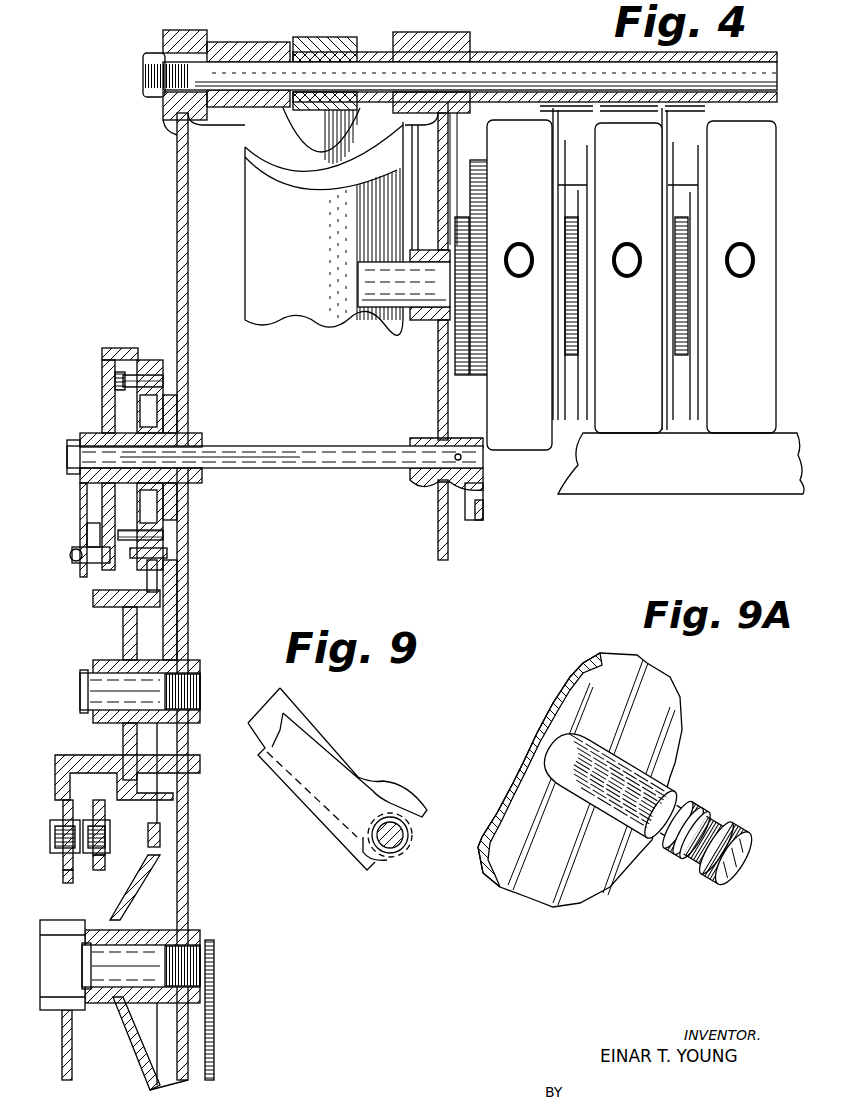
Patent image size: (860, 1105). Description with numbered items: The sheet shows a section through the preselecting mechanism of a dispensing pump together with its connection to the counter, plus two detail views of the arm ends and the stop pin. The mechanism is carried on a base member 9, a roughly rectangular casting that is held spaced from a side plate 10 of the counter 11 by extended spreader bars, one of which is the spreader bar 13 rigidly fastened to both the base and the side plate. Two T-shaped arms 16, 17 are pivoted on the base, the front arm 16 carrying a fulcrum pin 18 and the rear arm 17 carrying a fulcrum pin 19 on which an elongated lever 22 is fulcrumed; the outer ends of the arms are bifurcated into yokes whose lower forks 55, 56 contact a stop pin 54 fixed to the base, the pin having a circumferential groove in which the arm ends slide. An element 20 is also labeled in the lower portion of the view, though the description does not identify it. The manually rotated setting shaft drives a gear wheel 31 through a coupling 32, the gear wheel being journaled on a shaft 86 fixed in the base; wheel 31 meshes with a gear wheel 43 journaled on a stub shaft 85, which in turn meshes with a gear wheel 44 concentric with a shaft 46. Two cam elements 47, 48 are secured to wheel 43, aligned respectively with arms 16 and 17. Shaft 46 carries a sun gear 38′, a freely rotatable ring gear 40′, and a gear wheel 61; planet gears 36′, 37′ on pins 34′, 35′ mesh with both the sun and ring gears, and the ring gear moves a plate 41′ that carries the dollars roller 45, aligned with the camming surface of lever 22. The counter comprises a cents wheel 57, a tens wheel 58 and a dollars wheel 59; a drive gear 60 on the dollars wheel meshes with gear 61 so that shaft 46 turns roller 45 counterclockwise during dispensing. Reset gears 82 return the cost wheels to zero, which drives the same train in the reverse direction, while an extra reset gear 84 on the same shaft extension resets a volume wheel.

In FIG. 4, the base member 9 is at (186, 283).
In FIG. 9A, the base member 9 is at (675, 722).
In FIG. 4, the side plate 10 is at (448, 545).
In FIG. 4, the counter 11 is at (735, 418).
In FIG. 4, the spreader bar 13 is at (246, 68).
In FIG. 4, the T-shaped arm 16 is at (63, 870).
In FIG. 9, the T-shaped arm 16 is at (327, 828).
In FIG. 4, the T-shaped arm 17 is at (103, 857).
In FIG. 9, the T-shaped arm 17 is at (337, 745).
In FIG. 4, the fulcrum pin 18 is at (58, 840).
In FIG. 4, the fulcrum pin 19 is at (105, 845).
In FIG. 4, the rod 20 is at (72, 887).
In FIG. 4, the lever 22 is at (90, 580).
In FIG. 4, the gear wheel 31 is at (160, 835).
In FIG. 4, the coupling 32 is at (65, 925).
In FIG. 4, the pin 34′ is at (160, 382).
In FIG. 4, the pin 35′ is at (160, 537).
In FIG. 4, the planet gear 36′ is at (120, 375).
In FIG. 4, the planet gear 37′ is at (163, 553).
In FIG. 4, the sun gear 38′ is at (128, 428).
In FIG. 4, the ring gear 40′ is at (125, 348).
In FIG. 4, the plate 41′ is at (80, 510).
In FIG. 4, the gear wheel 43 is at (155, 580).
In FIG. 4, the gear wheel 44 is at (160, 512).
In FIG. 4, the dollars roller 45 is at (87, 530).
In FIG. 4, the shaft 46 is at (336, 468).
In FIG. 4, the cam element 47 is at (55, 800).
In FIG. 4, the cam element 48 is at (115, 582).
In FIG. 9, the stop pin 54 is at (412, 835).
In FIG. 9A, the stop pin 54 is at (675, 785).
In FIG. 9, the lower fork 55 is at (380, 860).
In FIG. 9, the lower fork 56 is at (407, 850).
In FIG. 4, the cents wheel 57 is at (763, 192).
In FIG. 4, the tens wheel 58 is at (663, 134).
In FIG. 4, the dollars wheel 59 is at (517, 452).
In FIG. 4, the drive gear 60 is at (478, 168).
In FIG. 4, the gear wheel 61 is at (485, 502).
In FIG. 4, the reset gear 82 is at (465, 395).
In FIG. 4, the reset gear 84 is at (215, 1022).
In FIG. 4, the stub shaft 85 is at (80, 685).
In FIG. 4, the shaft 86 is at (85, 965).